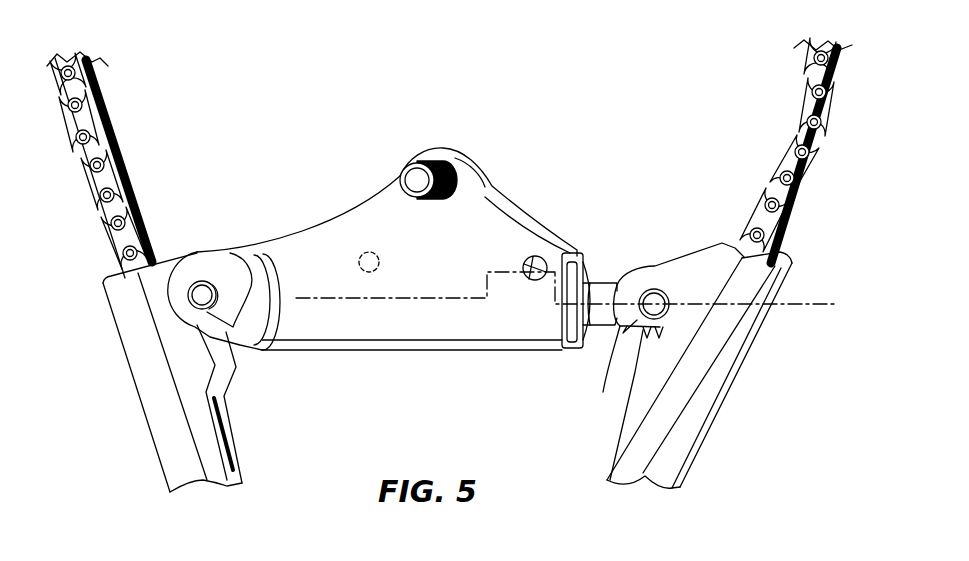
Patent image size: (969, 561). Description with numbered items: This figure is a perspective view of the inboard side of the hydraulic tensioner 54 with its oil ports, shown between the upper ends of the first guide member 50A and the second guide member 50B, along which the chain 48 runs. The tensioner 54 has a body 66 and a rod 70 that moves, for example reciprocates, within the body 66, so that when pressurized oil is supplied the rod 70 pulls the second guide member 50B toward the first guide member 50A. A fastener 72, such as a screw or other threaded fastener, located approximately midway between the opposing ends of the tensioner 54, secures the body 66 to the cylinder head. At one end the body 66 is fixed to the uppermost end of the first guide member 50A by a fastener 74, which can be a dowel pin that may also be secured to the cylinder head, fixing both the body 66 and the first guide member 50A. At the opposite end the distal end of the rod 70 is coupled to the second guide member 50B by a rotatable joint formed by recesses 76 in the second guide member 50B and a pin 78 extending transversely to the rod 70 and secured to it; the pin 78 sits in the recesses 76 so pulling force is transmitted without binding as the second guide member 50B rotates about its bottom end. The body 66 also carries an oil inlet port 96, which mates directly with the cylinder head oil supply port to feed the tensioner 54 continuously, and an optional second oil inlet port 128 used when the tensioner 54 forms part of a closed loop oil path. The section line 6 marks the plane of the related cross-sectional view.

The chain 48 is at (88, 120).
The first guide member 50A is at (148, 380).
The second guide member 50B is at (725, 382).
The tensioner 54 is at (531, 153).
The section line 6- 6 is at (296, 298).
The body 66 is at (407, 313).
The rod 70 is at (605, 287).
The fastener 72 is at (430, 172).
The fastener 74 is at (204, 291).
The recesses 76 is at (650, 328).
The pin 78 is at (653, 296).
The oil inlet port 96 is at (533, 278).
The second oil inlet port 128 is at (357, 258).